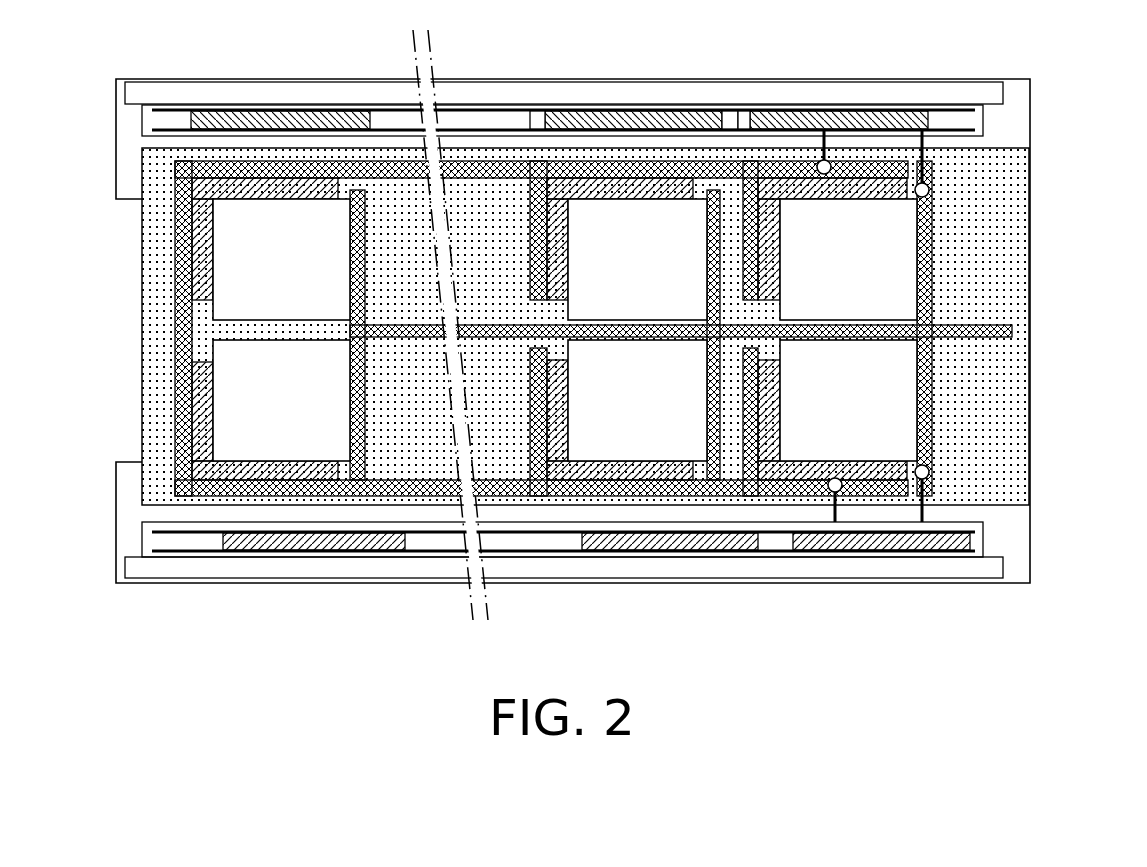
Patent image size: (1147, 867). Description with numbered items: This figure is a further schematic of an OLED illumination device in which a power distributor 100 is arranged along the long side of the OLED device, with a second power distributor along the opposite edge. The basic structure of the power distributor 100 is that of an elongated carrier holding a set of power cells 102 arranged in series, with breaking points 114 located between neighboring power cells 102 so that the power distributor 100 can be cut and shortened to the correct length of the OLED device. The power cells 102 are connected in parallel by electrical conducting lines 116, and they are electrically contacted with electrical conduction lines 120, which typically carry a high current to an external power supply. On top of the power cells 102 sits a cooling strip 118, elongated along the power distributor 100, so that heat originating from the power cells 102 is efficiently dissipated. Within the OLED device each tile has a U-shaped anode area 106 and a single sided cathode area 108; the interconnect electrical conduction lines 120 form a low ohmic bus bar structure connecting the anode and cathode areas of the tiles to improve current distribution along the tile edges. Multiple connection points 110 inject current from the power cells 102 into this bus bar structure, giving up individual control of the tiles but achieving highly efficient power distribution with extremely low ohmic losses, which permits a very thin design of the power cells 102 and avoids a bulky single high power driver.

The power distributor 100 is at (1030, 88).
The power cell 102 is at (293, 111).
The anode area 106 is at (200, 278).
The cathode area 108 is at (828, 277).
The electrical contact 110 is at (930, 472).
The breaking point 114 is at (535, 111).
The electrical conducting line 116 is at (975, 110).
The cooling strip 118 is at (903, 93).
The electrical conduction line 120 is at (1012, 331).